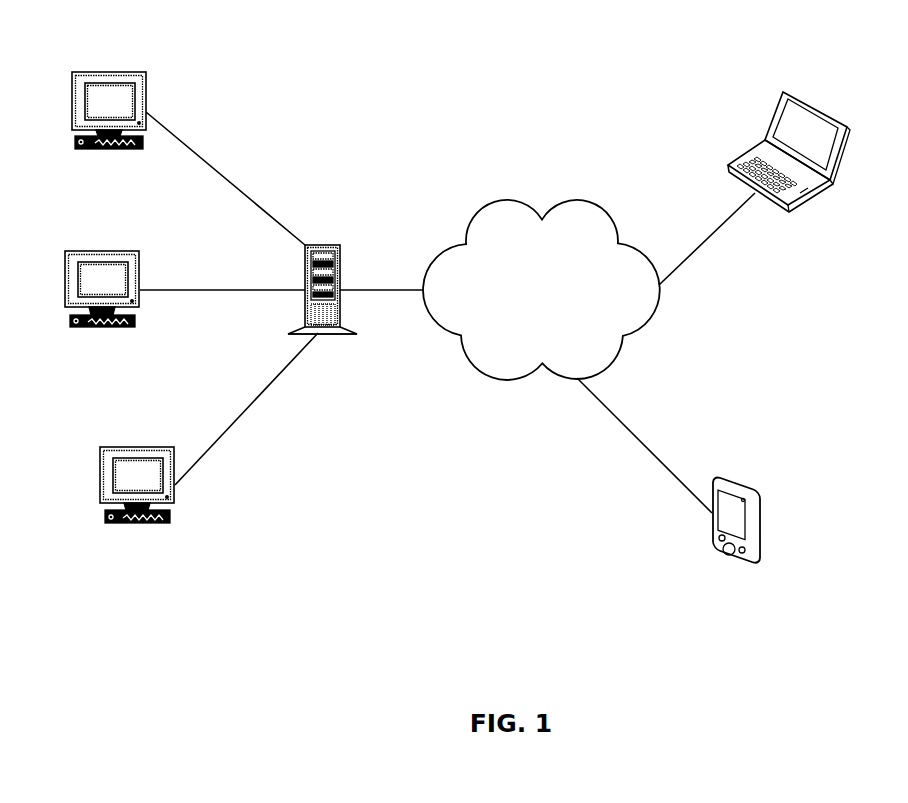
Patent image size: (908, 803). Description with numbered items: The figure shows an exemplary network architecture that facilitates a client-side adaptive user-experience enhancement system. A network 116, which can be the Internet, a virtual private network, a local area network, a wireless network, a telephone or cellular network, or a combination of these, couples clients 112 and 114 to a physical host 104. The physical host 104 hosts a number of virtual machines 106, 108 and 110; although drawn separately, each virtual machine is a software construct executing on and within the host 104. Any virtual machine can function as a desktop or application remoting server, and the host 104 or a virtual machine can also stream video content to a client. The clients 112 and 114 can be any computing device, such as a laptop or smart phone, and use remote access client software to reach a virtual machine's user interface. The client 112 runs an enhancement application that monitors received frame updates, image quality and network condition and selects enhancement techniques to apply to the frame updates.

The physical host 104 is at (322, 245).
The virtual machine 106 is at (108, 71).
The virtual machine 108 is at (100, 251).
The virtual machine 110 is at (135, 447).
The client 112 is at (820, 107).
The client 114 is at (712, 550).
The network 116 is at (529, 308).